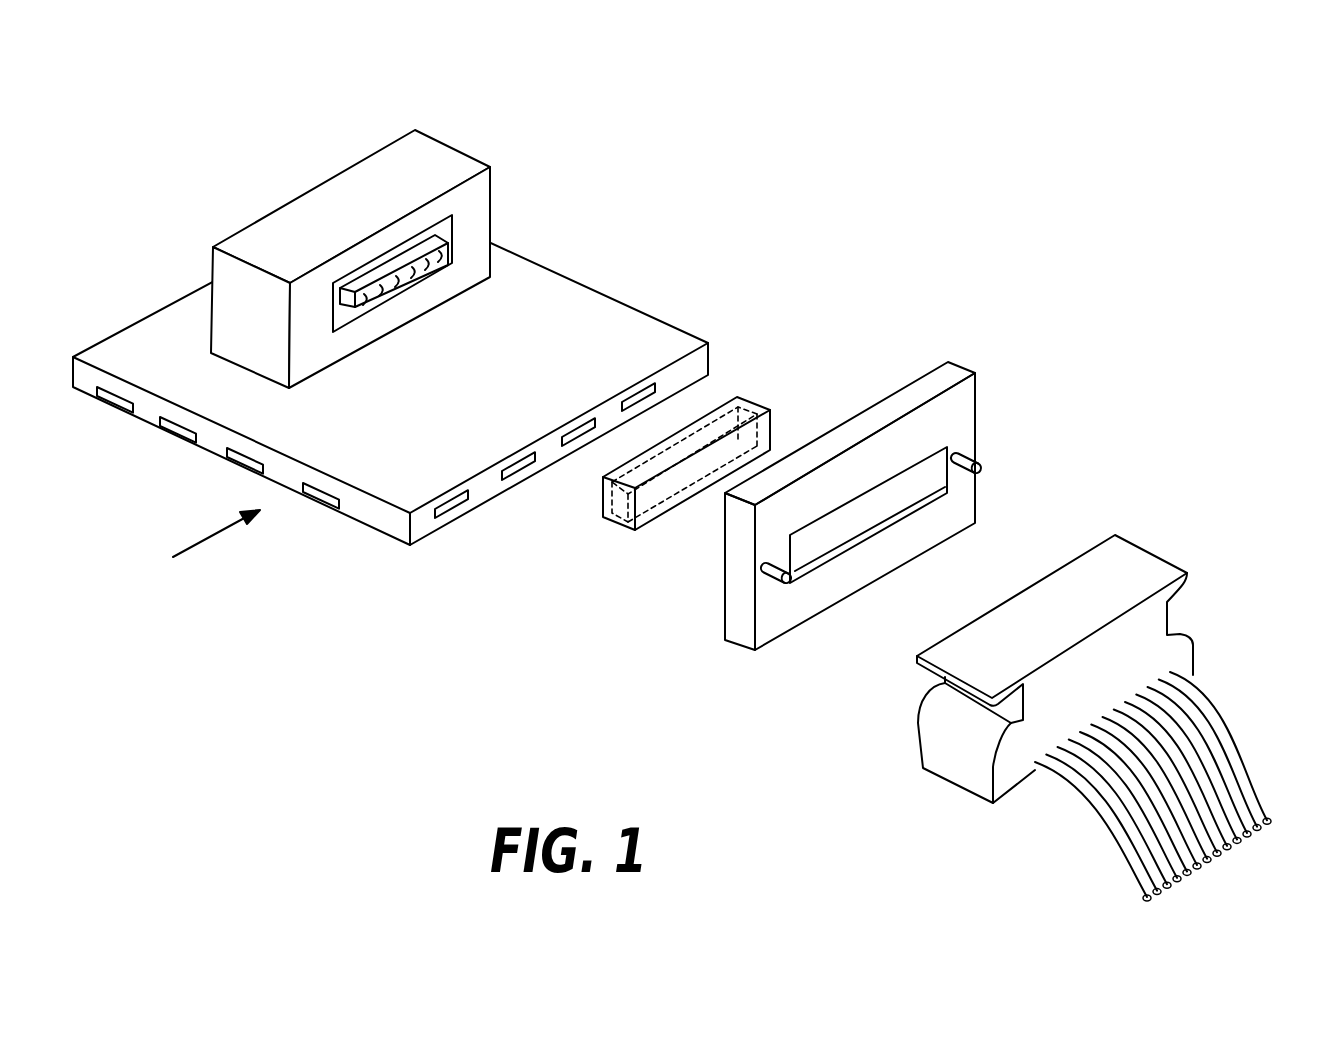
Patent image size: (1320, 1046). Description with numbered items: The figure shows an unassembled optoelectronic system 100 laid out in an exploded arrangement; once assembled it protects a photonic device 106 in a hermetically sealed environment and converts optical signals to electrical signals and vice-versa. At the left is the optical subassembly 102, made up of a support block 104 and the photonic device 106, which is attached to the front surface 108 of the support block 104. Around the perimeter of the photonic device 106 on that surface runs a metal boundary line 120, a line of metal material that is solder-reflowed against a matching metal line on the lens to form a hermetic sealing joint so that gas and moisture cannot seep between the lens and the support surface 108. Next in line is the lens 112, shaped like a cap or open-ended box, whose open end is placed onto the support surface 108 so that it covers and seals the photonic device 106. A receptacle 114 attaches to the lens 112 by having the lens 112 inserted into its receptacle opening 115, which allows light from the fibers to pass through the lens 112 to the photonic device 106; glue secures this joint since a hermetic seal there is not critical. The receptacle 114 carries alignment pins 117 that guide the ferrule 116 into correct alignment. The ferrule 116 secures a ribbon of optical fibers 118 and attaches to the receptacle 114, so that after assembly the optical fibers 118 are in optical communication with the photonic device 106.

The optoelectronic system 100 is at (921, 210).
The optical subassembly 102 is at (385, 260).
The support block 104 is at (452, 150).
The photonic device 106 is at (345, 310).
The front surface 108 is at (302, 287).
The lens 112 is at (755, 402).
The receptacle 114 is at (890, 511).
The receptacle opening 115 is at (905, 485).
The ferrule 116 is at (1157, 550).
The alignment pins 117 is at (978, 458).
The optical fibers 118 is at (1223, 710).
The metal boundary line 120 is at (453, 227).